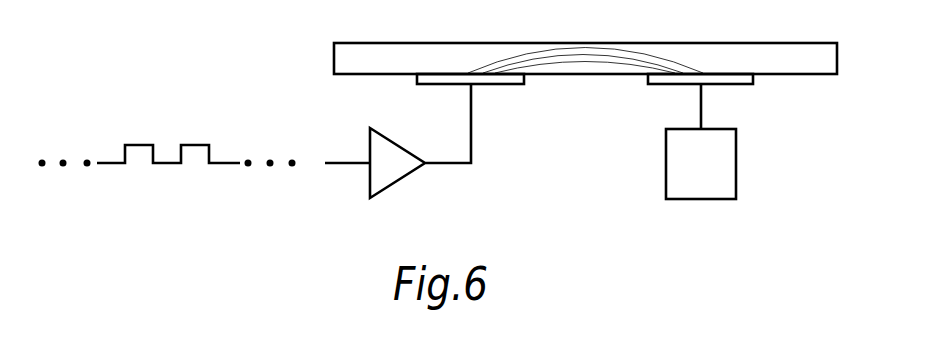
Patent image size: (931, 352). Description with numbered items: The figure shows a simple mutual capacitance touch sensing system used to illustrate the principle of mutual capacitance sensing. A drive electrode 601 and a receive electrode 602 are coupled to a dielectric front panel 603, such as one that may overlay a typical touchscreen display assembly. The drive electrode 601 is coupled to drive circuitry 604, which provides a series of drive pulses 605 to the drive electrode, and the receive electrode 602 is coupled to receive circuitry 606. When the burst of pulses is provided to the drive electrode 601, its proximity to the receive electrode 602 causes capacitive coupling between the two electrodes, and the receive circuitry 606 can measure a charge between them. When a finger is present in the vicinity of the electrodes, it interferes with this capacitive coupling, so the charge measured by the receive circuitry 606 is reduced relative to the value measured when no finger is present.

The drive electrode 601 is at (490, 85).
The receive electrode 602 is at (718, 87).
The dielectric front panel 603 is at (408, 43).
The drive circuitry 604 is at (398, 185).
The drive pulses 605 is at (138, 143).
The receive circuitry 606 is at (737, 162).